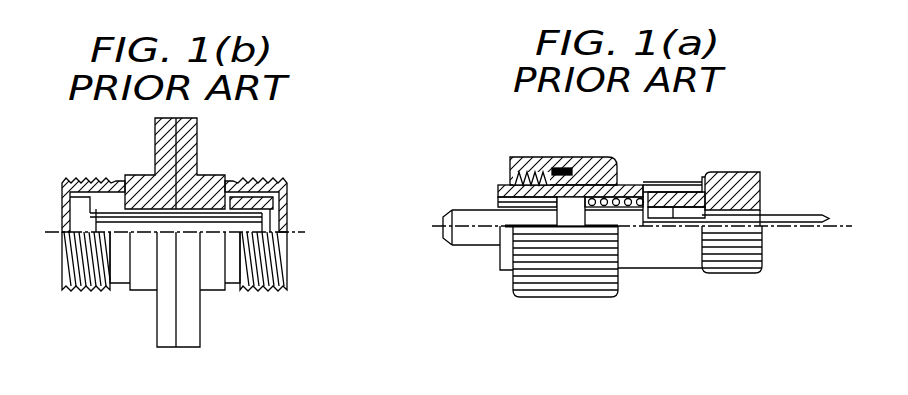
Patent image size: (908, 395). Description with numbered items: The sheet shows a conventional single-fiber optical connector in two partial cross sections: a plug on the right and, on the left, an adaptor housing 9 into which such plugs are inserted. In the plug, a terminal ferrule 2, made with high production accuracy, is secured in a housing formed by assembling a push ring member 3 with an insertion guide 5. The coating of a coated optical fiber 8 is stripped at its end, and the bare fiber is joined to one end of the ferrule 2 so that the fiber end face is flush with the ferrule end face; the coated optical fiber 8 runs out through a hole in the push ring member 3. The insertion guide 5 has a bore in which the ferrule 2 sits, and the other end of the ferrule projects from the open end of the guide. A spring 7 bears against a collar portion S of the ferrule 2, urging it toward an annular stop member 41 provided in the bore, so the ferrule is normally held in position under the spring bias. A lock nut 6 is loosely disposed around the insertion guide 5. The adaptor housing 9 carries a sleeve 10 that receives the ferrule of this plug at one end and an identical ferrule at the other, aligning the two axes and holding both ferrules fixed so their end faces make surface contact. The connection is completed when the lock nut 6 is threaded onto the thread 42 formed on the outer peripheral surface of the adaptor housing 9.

In FIG. 1B, the adaptor housing 9 is at (211, 176).
In FIG. 1B, the thread 42 is at (265, 180).
In FIG. 1B, the sleeve 10 is at (233, 212).
In FIG. 1A, the ferrule 2 is at (466, 213).
In FIG. 1A, the annular stop member 41 is at (493, 197).
In FIG. 1A, the lock nut 6 is at (578, 158).
In FIG. 1A, the collar portion S is at (574, 205).
In FIG. 1A, the spring 7 is at (622, 195).
In FIG. 1A, the insertion guide 5 is at (648, 183).
In FIG. 1A, the push ring member 3 is at (729, 172).
In FIG. 1A, the coated optical fiber 8 is at (795, 214).